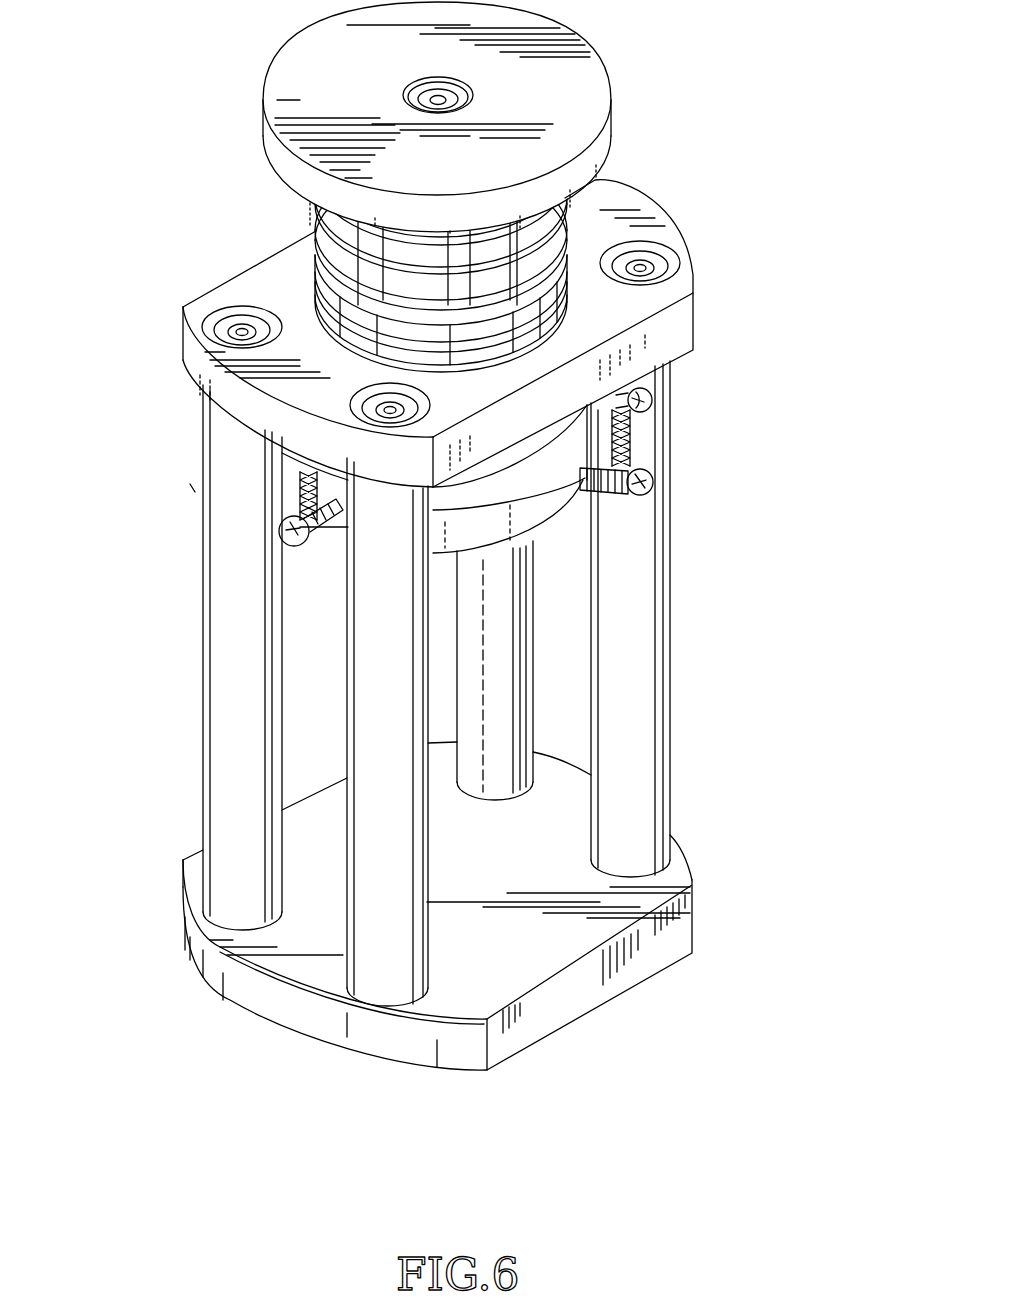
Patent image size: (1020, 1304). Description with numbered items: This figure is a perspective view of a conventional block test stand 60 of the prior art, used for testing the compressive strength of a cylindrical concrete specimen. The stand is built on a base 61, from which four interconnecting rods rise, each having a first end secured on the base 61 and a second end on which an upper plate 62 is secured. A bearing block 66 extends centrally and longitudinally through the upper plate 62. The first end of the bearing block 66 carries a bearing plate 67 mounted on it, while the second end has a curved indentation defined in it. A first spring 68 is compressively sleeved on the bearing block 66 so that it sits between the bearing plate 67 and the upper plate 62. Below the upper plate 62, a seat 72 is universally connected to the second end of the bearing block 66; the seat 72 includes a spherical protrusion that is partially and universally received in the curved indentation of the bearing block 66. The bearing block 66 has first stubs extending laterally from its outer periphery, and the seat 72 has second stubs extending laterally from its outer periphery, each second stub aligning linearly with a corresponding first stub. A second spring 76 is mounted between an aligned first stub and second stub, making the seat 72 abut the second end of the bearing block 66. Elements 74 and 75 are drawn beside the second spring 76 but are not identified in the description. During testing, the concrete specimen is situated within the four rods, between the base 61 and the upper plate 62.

The block test stand 60 is at (178, 644).
The base 61 is at (545, 950).
The upper plate 62 is at (270, 387).
The bearing block 66 is at (437, 262).
The bearing plate 67 is at (553, 93).
The first spring 68 is at (583, 205).
The seat 72 is at (525, 520).
The screw head 74 is at (652, 395).
The screw 75 is at (652, 483).
The second spring 76 is at (632, 440).